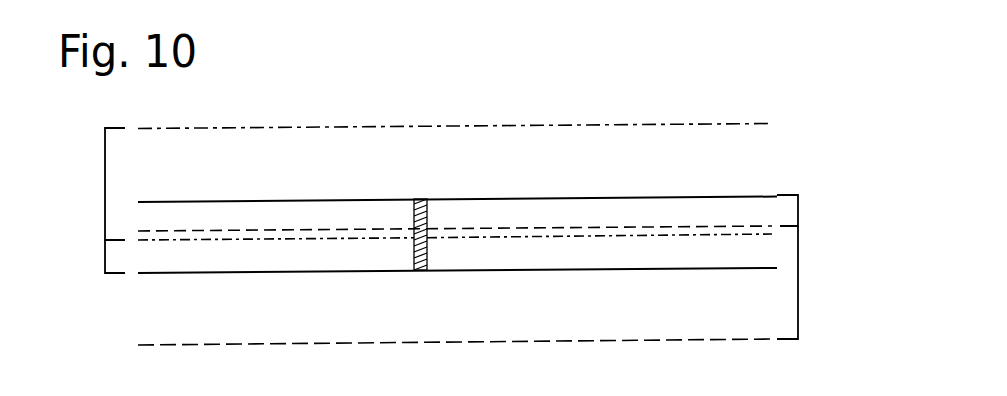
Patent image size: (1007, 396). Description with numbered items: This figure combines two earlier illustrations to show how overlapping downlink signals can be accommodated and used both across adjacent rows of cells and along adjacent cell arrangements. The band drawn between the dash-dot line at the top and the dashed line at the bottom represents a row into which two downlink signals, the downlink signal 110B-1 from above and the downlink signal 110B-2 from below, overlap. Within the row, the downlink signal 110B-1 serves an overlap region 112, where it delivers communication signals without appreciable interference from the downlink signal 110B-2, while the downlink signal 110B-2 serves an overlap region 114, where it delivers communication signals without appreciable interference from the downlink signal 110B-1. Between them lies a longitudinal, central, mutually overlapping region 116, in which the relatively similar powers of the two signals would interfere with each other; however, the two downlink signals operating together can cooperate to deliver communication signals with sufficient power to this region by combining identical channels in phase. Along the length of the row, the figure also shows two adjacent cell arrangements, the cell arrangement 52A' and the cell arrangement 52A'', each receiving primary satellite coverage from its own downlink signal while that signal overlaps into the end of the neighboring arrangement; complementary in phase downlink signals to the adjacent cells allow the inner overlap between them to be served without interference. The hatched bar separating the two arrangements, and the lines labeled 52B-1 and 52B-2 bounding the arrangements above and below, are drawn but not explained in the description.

The downlink signal 110B-1 is at (104, 210).
The downlink signal 110B-2 is at (799, 293).
The overlap region 112 is at (799, 210).
The overlap region 114 is at (105, 258).
The longitudinal, central, mutually overlapping region 116 is at (652, 228).
The cell arrangement 52A' is at (276, 253).
The cell arrangement 52A'' is at (599, 250).
The first core boundary 52B-1 is at (457, 173).
The second core boundary 52B-2 is at (457, 294).